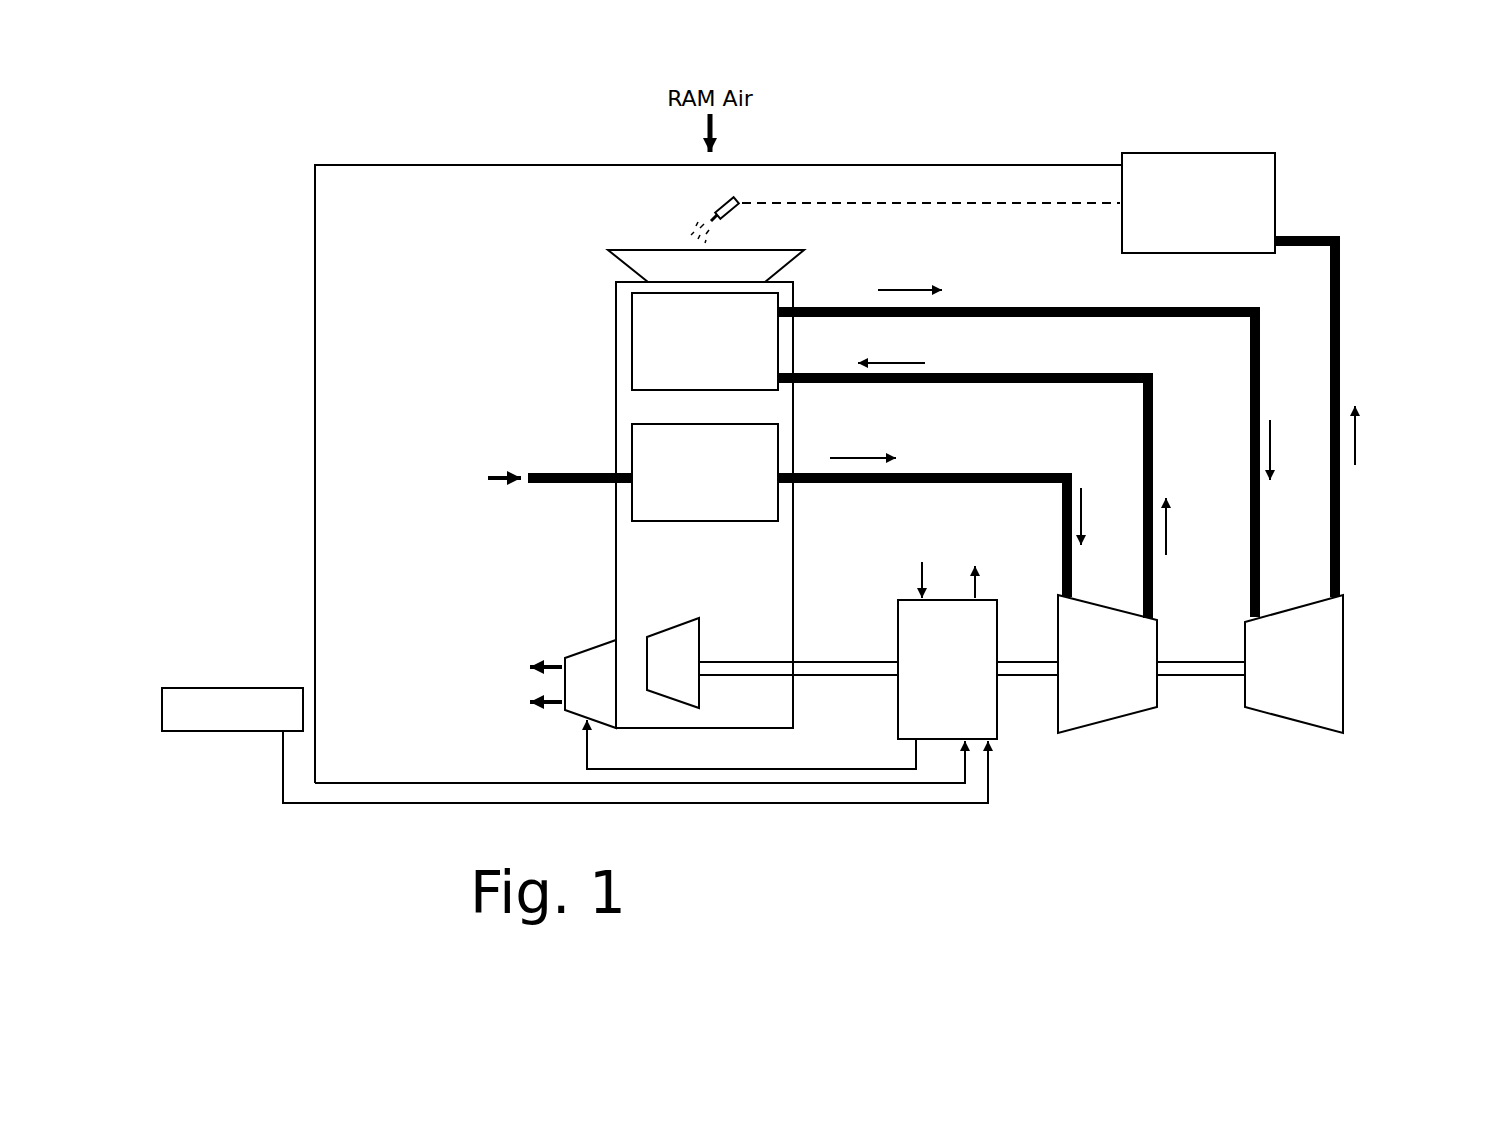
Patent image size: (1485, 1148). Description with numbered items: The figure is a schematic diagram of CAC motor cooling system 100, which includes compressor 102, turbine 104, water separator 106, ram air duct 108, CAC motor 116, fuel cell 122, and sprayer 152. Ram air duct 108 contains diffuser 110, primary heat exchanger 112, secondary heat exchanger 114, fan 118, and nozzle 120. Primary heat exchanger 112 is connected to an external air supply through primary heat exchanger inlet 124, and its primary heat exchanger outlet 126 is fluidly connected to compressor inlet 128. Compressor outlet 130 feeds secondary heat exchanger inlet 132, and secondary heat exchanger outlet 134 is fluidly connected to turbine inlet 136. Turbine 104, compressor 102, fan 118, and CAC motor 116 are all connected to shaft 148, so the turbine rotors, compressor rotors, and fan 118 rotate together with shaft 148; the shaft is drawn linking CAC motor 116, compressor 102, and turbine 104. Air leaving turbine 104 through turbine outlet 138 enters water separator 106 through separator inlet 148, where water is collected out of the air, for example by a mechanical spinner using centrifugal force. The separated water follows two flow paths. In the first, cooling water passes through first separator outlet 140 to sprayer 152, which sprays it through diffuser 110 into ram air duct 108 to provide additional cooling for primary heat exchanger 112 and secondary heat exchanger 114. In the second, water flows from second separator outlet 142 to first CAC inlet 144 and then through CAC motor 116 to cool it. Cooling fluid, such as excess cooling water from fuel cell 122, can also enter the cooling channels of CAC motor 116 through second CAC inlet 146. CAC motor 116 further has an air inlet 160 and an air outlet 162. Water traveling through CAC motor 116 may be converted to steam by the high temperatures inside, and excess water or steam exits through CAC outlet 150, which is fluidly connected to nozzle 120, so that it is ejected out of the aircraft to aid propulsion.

The CAC motor cooling system 100 is at (679, 426).
The compressor 102 is at (1113, 722).
The turbine 104 is at (1290, 722).
The water separator 106 is at (1268, 190).
The ram air duct 108 is at (613, 402).
The diffuser 110 is at (640, 275).
The primary heat exchanger 112 is at (705, 472).
The secondary heat exchanger 114 is at (705, 341).
The CAC motor 116 is at (897, 637).
The fan 118 is at (667, 629).
The nozzle 120 is at (578, 651).
The fuel cell 122 is at (222, 686).
The primary heat exchanger inlet 124 is at (533, 484).
The primary heat exchanger outlet 126 is at (780, 470).
The compressor inlet 128 is at (1072, 600).
The compressor outlet 130 is at (1153, 620).
The secondary heat exchanger inlet 132 is at (795, 370).
The secondary heat exchanger outlet 134 is at (795, 305).
The turbine inlet 136 is at (1263, 618).
The turbine outlet 138 is at (1338, 597).
The first separator outlet 140 is at (1120, 206).
The second separator outlet 142 is at (1120, 163).
The first CAC inlet 144 is at (975, 738).
The second CAC inlet 146 is at (993, 742).
The shaft 148 is at (1273, 250).
The CAC outlet 150 is at (912, 740).
The sprayer 152 is at (716, 207).
The air inlet 160 is at (918, 594).
The air outlet 162 is at (979, 598).